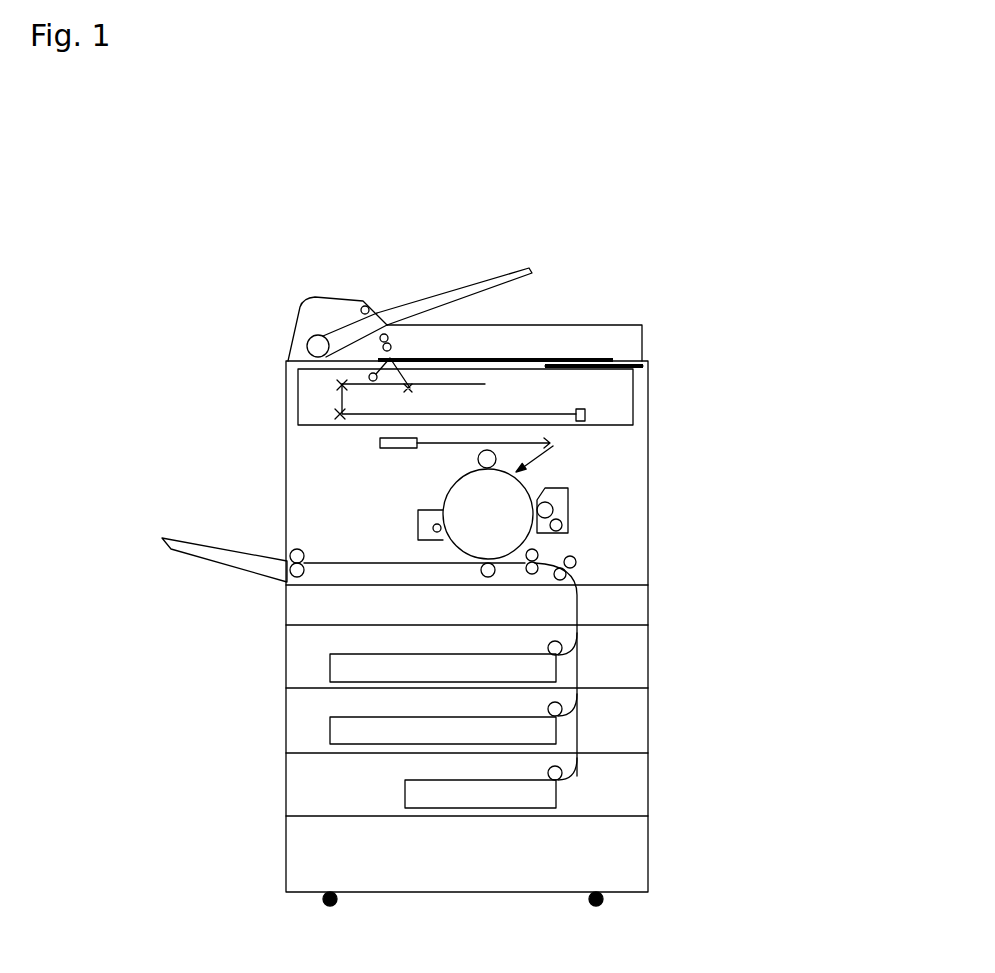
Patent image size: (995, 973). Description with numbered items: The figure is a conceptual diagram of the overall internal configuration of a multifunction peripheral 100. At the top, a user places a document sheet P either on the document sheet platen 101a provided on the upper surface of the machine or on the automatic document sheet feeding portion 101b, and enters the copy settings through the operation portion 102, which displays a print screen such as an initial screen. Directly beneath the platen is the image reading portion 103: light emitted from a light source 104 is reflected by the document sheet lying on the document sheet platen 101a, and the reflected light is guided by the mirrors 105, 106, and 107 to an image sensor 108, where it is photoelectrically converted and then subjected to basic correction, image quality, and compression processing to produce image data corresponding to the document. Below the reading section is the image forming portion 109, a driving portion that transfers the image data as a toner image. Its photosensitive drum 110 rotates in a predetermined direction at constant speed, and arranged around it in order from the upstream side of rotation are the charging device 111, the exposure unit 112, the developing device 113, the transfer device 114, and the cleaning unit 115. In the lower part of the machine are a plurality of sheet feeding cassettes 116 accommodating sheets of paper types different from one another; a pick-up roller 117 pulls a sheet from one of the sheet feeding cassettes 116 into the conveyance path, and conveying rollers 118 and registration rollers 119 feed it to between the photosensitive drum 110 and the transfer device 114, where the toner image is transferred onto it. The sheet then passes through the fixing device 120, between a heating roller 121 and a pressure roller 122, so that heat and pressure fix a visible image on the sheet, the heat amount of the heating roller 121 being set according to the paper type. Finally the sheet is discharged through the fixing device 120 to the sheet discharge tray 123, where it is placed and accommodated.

The multifunction peripheral 100 is at (483, 272).
The document sheet P is at (598, 360).
The document sheet platen 101a is at (620, 361).
The automatic document sheet feeding portion 101b is at (427, 304).
The operation portion 102 is at (650, 362).
The image reading portion 103 is at (623, 393).
The light source 104 is at (369, 376).
The mirror 105 is at (410, 388).
The mirror 106 is at (337, 385).
The mirror 107 is at (336, 415).
The image sensor 108 is at (576, 411).
The image forming portion 109 is at (670, 467).
The photosensitive drum 110 is at (462, 490).
The charging device 111 is at (477, 460).
The exposure unit 112 is at (380, 444).
The developing device 113 is at (551, 489).
The transfer device 114 is at (489, 578).
The cleaning unit 115 is at (418, 517).
The sheet feeding cassette 116 is at (330, 670).
The pick-up roller 117 is at (562, 648).
The conveying rollers 118 is at (572, 559).
The registration rollers 119 is at (532, 575).
The fixing device 120 is at (231, 531).
The heating roller 121 is at (288, 550).
The pressure roller 122 is at (288, 562).
The sheet discharge tray 123 is at (160, 534).